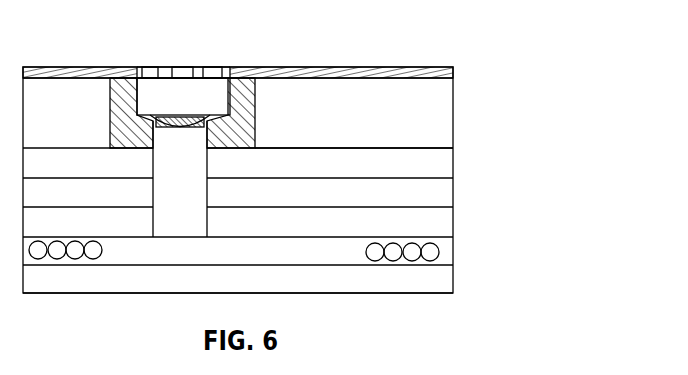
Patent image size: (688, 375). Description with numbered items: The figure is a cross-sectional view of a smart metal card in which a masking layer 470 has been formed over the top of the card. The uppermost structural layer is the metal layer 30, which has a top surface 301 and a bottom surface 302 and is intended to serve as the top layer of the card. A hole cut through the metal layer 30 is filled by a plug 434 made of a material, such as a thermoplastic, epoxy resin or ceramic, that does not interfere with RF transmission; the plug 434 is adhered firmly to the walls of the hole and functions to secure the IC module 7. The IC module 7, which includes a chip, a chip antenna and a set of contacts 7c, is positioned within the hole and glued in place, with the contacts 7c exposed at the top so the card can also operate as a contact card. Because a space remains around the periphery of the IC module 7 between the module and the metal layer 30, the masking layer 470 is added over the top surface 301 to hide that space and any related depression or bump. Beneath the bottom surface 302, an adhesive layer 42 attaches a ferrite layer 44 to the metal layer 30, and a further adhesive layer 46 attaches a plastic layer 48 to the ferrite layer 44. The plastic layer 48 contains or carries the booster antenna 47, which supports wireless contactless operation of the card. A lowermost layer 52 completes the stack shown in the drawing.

The IC module 7 is at (183, 102).
The set of contacts 7c is at (218, 67).
The metal layer 30 is at (457, 103).
The top surface 301 is at (435, 80).
The bottom surface 302 is at (430, 148).
The plug 434 is at (255, 115).
The masking layer 470 is at (393, 67).
The adhesive layer 42 is at (453, 160).
The ferrite layer 44 is at (453, 189).
The adhesive layer 46 is at (453, 219).
The booster antenna 47 is at (40, 259).
The plastic layer 48 is at (453, 247).
The bottom layer 52 is at (453, 275).